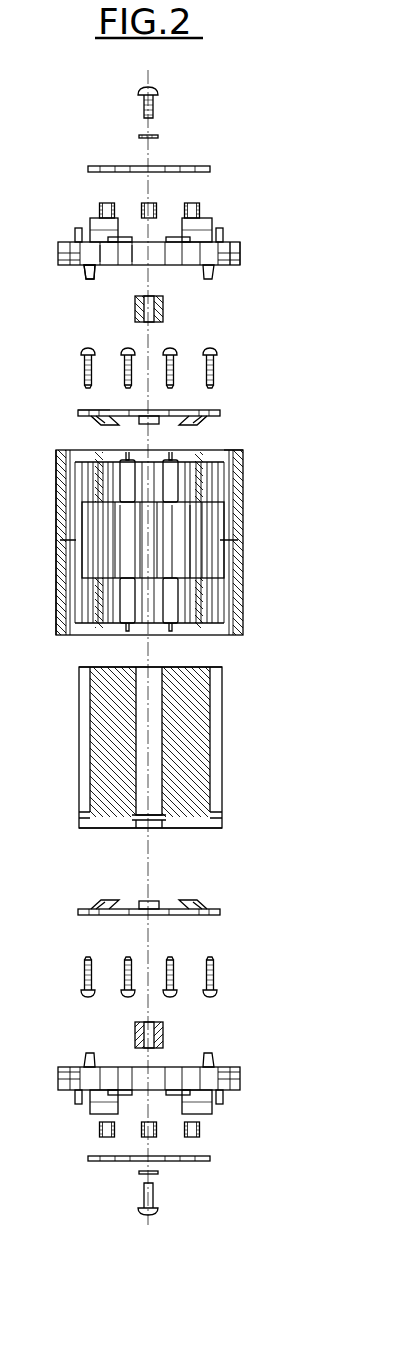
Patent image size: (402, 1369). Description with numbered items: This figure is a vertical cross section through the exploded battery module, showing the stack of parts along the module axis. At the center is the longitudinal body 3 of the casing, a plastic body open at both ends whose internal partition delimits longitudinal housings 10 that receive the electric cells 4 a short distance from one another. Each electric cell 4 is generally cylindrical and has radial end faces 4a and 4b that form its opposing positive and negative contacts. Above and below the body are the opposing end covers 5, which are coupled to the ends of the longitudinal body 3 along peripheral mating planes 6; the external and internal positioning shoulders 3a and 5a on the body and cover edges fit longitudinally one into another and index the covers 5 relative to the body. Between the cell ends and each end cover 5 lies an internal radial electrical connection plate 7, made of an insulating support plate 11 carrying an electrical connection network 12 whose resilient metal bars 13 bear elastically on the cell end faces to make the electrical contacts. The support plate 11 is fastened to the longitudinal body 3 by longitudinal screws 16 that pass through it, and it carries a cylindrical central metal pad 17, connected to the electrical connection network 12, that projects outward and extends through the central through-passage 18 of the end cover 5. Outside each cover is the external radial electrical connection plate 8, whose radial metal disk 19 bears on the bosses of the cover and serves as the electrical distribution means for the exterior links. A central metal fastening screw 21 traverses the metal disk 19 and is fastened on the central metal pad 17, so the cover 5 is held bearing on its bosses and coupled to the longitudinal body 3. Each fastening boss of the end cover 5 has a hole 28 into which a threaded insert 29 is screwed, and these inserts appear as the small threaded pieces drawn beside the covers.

The longitudinal body 3 is at (154, 541).
The external positioning shoulder 3a is at (240, 451).
The electric cell 4 is at (126, 753).
The radial end face 4a is at (90, 667).
The radial end face 4b is at (100, 826).
The end cover 5 is at (166, 279).
The internal positioning shoulder 5a is at (242, 257).
The peripheral mating plane 6 is at (72, 263).
The internal radial electrical connection plate 7 is at (157, 419).
The external radial electrical connection plate 8 is at (218, 168).
The longitudinal housing 10 is at (75, 562).
The support plate 11 is at (93, 413).
The electrical connection network 12 is at (87, 423).
The resilient metal bar 13 is at (203, 423).
The longitudinal screw 16 is at (216, 365).
The central metal pad 17 is at (164, 309).
The central through-passage 18 is at (142, 262).
The radial metal disk 19 is at (183, 165).
The central metal fastening screw 21 is at (141, 108).
The hole 28 is at (105, 262).
The threaded insert 29 is at (201, 209).